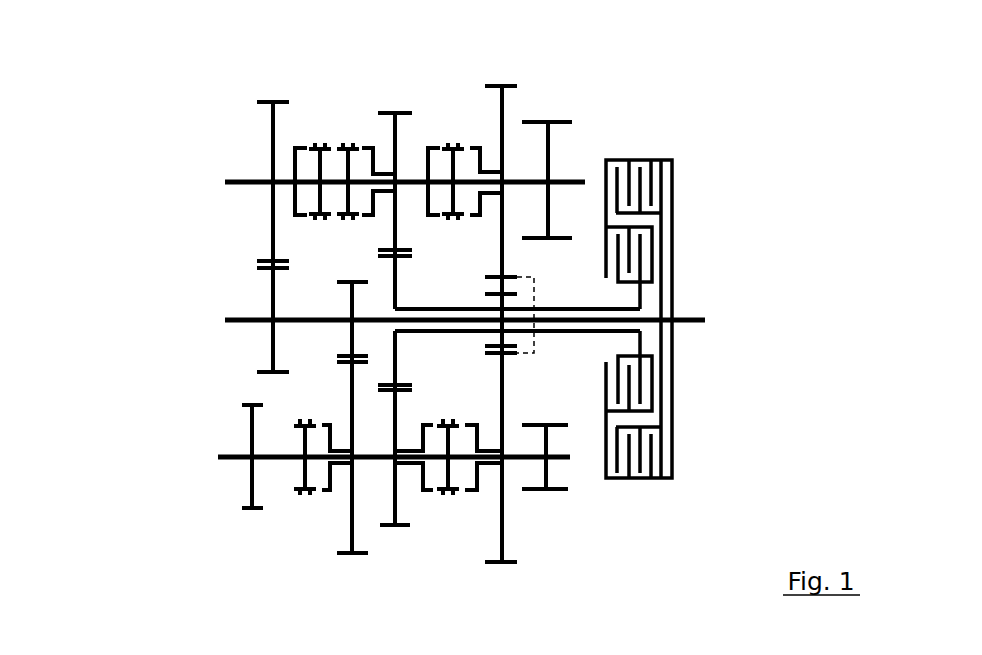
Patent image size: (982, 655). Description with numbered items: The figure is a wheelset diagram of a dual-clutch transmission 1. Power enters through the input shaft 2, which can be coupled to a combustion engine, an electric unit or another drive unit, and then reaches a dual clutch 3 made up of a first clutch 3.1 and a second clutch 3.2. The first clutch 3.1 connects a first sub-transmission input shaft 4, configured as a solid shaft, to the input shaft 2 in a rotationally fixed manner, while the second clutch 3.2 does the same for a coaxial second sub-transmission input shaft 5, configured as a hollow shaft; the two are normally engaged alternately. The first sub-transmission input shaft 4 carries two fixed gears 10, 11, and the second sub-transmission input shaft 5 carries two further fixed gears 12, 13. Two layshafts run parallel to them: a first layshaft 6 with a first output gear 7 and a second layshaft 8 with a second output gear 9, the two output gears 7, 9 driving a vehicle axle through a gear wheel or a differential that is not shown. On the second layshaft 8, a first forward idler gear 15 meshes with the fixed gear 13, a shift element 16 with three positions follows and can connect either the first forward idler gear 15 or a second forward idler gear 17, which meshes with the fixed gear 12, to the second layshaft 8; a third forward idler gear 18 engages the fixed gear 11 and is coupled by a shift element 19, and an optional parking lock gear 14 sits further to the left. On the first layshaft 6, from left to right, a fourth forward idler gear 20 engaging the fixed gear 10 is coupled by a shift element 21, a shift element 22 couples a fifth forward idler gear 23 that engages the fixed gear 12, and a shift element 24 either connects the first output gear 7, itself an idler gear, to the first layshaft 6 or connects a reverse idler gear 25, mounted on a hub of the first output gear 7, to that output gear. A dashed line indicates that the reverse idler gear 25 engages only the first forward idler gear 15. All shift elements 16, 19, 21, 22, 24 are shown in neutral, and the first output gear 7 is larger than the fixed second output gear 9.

The dual-clutch transmission 1 is at (160, 120).
The input shaft 2 is at (705, 320).
The dual clutch 3 is at (670, 157).
The first clutch 3.1 is at (643, 195).
The second clutch 3.2 is at (633, 258).
The first sub-transmission input shaft 4 is at (603, 321).
The second sub-transmission input shaft 5 is at (565, 333).
The first layshaft 6 is at (225, 182).
The first output gear 7 is at (550, 150).
The second layshaft 8 is at (222, 458).
The second output gear 9 is at (547, 473).
The fixed gear 10 is at (270, 290).
The fixed gear 11 is at (350, 340).
The fixed gear 12 is at (393, 368).
The fixed gear 13 is at (500, 300).
The parking lock gear 14 is at (250, 412).
The first forward idler gear 15 is at (503, 530).
The shift element 16 is at (448, 495).
The second forward idler gear 17 is at (393, 527).
The third forward idler gear 18 is at (350, 533).
The shift element 19 is at (320, 477).
The fourth forward idler gear 20 is at (272, 140).
The shift element 21 is at (305, 162).
The shift element 22 is at (360, 160).
The fifth forward idler gear 23 is at (397, 114).
The shift element 24 is at (465, 162).
The reverse idler gear 25 is at (505, 100).